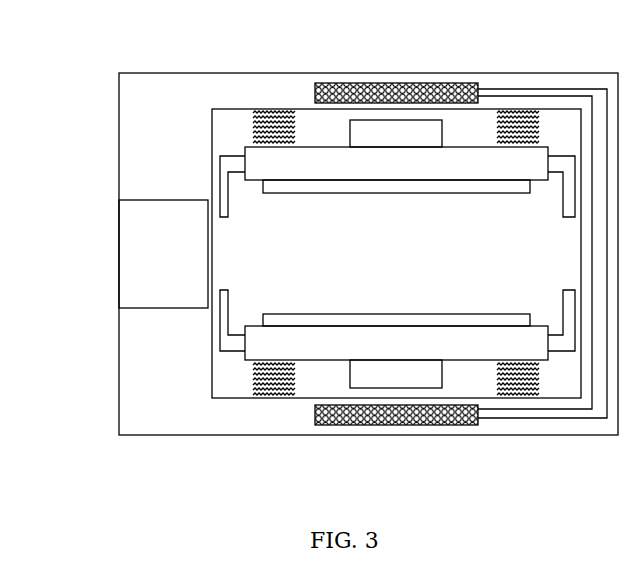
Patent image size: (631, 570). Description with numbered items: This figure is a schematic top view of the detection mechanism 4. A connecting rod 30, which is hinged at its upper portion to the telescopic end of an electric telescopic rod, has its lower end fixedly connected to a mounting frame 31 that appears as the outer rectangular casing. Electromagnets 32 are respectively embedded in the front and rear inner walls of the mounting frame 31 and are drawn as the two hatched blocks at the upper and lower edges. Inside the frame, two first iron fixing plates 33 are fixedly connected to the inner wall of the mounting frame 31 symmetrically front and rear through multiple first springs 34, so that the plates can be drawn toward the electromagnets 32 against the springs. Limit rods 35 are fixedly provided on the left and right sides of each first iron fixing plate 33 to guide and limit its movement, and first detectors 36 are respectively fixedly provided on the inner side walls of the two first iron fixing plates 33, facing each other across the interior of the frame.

The detection mechanism 4 is at (270, 259).
The connecting rod 30 is at (168, 255).
The mounting frame 31 is at (168, 150).
The electromagnets 32 is at (450, 420).
The first iron fixing plates 33 is at (400, 133).
The first springs 34 is at (522, 112).
The limit rods 35 is at (228, 158).
The first detectors 36 is at (385, 185).